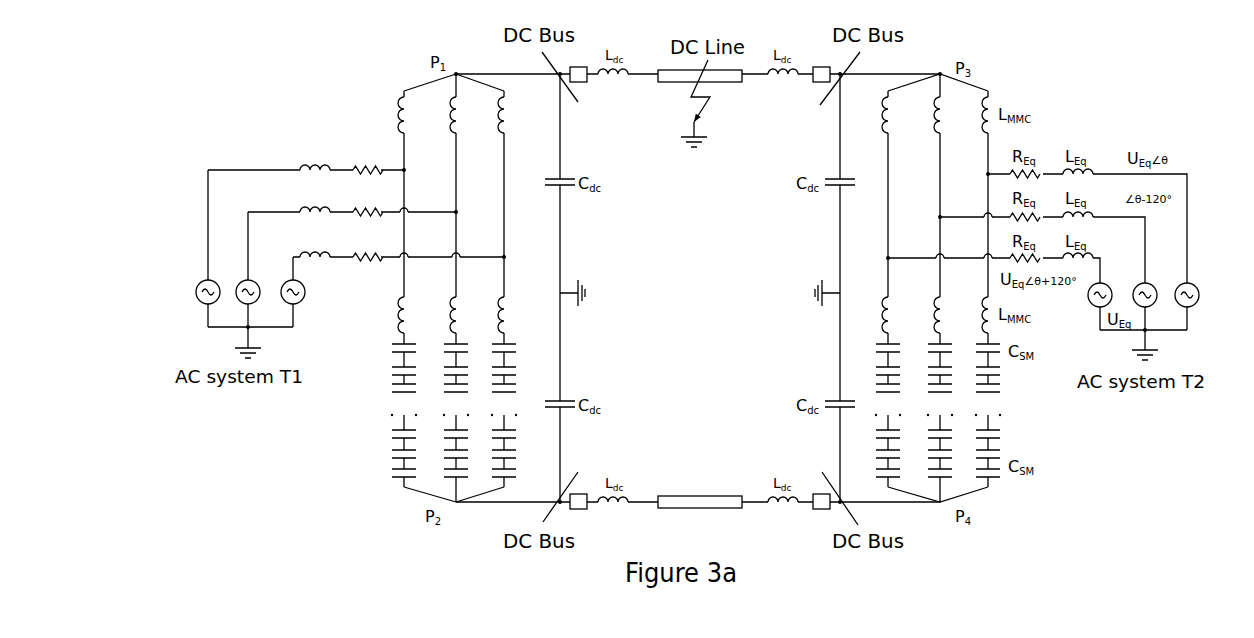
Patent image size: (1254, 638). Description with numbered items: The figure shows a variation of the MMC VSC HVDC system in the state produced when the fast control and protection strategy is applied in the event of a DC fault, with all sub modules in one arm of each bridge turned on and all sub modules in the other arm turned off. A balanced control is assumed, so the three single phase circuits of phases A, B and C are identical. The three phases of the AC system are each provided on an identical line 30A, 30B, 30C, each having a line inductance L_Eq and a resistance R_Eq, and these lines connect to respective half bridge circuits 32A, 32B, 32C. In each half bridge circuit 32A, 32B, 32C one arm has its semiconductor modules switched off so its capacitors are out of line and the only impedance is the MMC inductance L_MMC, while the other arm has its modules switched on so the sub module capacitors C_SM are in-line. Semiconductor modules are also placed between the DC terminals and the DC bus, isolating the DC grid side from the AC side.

The line 30A is at (208, 191).
The line 30B is at (248, 262).
The line 30C is at (303, 284).
The half bridge circuit 32A is at (415, 84).
The half bridge circuit 32B is at (455, 142).
The half bridge circuit 32C is at (505, 200).